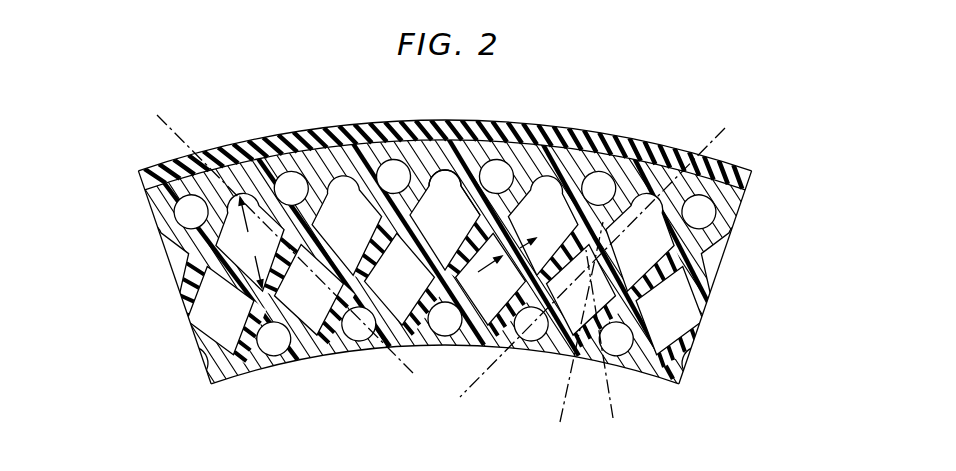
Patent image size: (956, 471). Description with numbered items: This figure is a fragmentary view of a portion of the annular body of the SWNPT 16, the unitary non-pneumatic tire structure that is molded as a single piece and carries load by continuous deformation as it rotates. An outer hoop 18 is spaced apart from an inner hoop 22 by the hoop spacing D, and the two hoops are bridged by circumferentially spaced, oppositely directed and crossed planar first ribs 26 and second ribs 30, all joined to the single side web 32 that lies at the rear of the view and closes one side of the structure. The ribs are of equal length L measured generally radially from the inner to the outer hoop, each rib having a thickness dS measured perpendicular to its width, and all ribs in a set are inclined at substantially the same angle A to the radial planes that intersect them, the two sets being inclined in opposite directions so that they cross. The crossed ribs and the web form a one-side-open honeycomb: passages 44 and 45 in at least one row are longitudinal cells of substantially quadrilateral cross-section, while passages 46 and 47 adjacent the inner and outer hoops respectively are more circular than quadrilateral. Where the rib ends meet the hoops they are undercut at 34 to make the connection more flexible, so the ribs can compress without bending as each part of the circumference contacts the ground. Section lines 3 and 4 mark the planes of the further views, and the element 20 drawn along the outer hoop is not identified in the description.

The section line 3- 3 is at (157, 115).
The section line 4- 4 is at (725, 128).
The SWNPT 16 is at (712, 328).
The outer hoop 18 is at (490, 168).
The outer ring 20 is at (567, 130).
The inner hoop 22 is at (307, 350).
The first ribs 26 is at (416, 197).
The second ribs 30 is at (478, 214).
The single side web 32 is at (176, 283).
The undercut 34 is at (405, 170).
The passage 44 is at (299, 309).
The passage 45 is at (339, 233).
The passage 46 is at (627, 335).
The passage 47 is at (712, 209).
The hoop spacing D is at (251, 242).
The rib length L is at (468, 249).
The rib thickness dS is at (534, 239).
The rib angle A is at (605, 403).